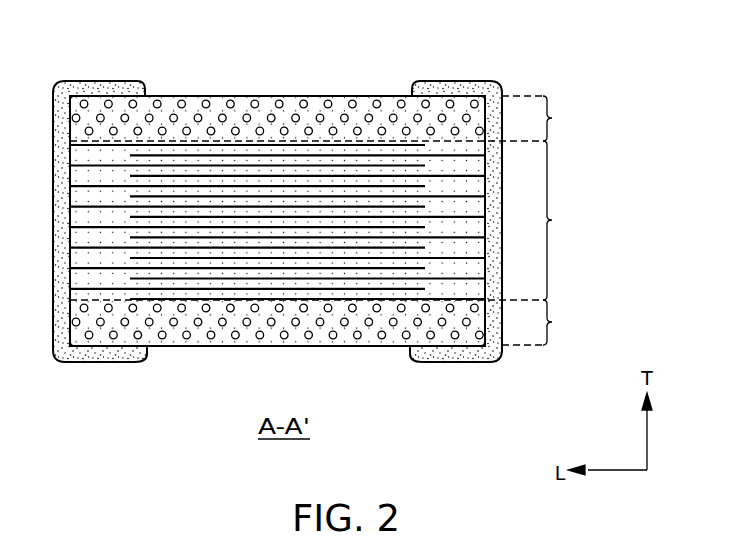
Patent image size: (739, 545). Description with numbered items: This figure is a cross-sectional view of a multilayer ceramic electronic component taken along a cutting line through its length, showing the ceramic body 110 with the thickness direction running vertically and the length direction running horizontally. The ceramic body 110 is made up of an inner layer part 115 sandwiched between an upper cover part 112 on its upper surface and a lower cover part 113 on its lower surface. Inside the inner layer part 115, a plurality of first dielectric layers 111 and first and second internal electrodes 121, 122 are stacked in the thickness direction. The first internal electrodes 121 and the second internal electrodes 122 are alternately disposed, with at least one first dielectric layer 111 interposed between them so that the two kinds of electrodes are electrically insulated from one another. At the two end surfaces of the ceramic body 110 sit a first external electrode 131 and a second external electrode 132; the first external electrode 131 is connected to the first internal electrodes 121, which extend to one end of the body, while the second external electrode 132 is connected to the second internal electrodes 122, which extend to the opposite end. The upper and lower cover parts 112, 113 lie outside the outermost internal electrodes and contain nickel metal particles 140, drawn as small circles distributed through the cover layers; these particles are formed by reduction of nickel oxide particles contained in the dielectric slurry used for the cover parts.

The ceramic body 110 is at (242, 96).
The first dielectric layer 111 is at (182, 200).
The upper cover part 112 is at (332, 118).
The lower cover part 113 is at (332, 322).
The inner layer part 115 is at (568, 220).
The first internal electrode 121 is at (199, 167).
The second internal electrode 122 is at (377, 173).
The first external electrode 131 is at (102, 88).
The second external electrode 132 is at (477, 88).
The nickel metal particle 140 is at (293, 117).